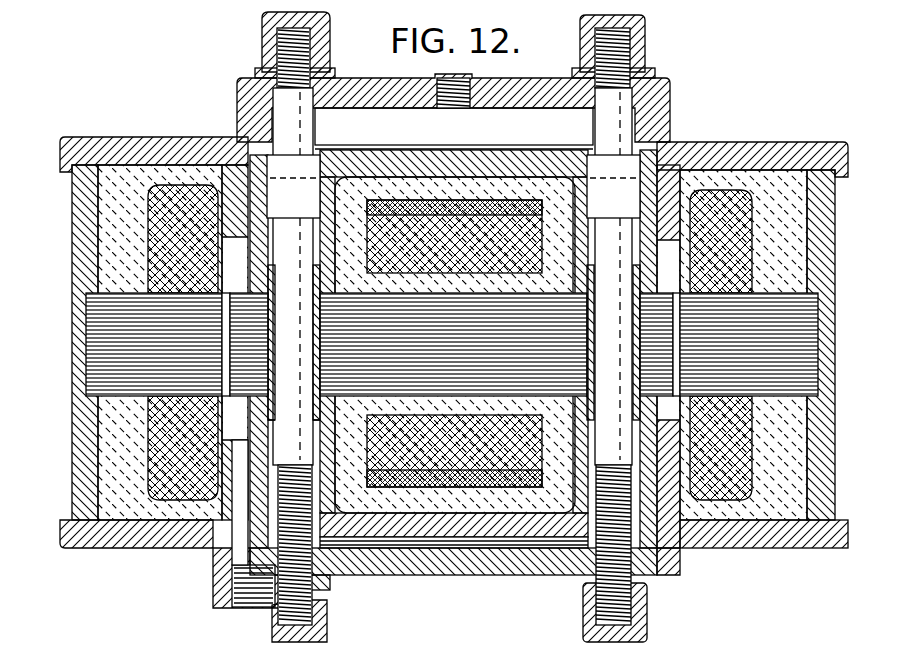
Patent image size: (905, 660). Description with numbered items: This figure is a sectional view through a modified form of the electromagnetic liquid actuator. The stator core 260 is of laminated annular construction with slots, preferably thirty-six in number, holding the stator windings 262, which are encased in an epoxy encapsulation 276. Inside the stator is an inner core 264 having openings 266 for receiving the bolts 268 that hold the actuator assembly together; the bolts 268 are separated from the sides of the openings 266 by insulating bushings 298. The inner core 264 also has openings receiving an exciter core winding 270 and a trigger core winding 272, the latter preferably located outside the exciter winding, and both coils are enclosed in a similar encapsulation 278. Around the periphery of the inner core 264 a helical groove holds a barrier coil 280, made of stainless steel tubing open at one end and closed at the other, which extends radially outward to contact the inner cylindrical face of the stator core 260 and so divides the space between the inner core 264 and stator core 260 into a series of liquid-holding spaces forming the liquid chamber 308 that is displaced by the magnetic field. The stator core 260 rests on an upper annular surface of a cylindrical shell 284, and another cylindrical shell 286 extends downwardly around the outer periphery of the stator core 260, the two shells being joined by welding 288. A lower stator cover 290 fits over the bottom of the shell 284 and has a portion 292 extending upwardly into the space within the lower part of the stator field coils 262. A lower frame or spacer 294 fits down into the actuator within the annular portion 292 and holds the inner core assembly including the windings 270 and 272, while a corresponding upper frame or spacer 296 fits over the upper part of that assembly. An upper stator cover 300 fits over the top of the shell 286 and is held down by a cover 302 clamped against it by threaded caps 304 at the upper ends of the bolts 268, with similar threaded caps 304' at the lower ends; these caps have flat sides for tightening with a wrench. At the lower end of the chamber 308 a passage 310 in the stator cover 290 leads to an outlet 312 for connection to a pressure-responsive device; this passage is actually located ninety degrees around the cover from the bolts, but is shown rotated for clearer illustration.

The stator core 260 is at (749, 344).
The stator windings 262 is at (717, 190).
The inner core 264 is at (500, 344).
The openings 266 is at (312, 348).
The bolts 268 is at (330, 590).
The exciter core winding 270 is at (437, 205).
The trigger core winding 272 is at (490, 205).
The epoxy encapsulation 276 is at (770, 175).
The encapsulation 278 is at (386, 183).
The barrier coil 280 is at (218, 300).
The cylindrical shell 284 is at (817, 512).
The cylindrical shell 286 is at (823, 165).
The welding 288 is at (823, 418).
The lower stator cover 290 is at (103, 548).
The portion 292 is at (675, 508).
The lower frame or spacer 294 is at (422, 525).
The upper frame or spacer 296 is at (550, 162).
The insulating bushings 298 is at (592, 283).
The upper stator cover 300 is at (136, 137).
The cover 302 is at (672, 96).
The threaded caps 304 is at (453, 50).
The threaded caps 304' is at (489, 616).
The liquid chamber 308 is at (243, 437).
The passage 310 is at (222, 528).
The outlet 312 is at (245, 607).